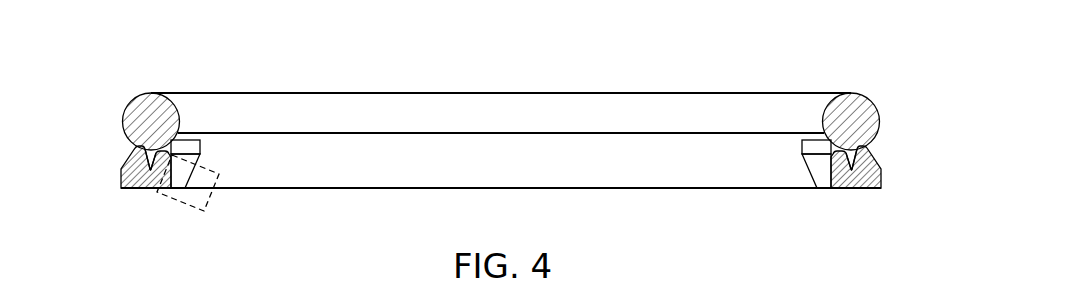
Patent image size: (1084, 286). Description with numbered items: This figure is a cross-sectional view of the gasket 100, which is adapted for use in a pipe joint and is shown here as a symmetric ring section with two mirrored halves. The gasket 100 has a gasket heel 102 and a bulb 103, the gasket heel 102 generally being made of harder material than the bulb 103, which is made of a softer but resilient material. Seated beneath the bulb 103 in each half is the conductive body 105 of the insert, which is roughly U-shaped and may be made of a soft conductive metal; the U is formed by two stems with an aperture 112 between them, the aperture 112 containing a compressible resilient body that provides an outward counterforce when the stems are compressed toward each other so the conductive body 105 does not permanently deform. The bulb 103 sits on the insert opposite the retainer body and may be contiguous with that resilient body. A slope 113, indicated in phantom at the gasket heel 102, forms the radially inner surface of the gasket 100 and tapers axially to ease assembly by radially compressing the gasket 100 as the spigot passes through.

The gasket 100 is at (276, 64).
The gasket heel 102 is at (121, 143).
The bulb 103 is at (136, 94).
The conductive body 105 is at (127, 160).
The aperture 112 is at (149, 164).
The slope 113 is at (216, 189).